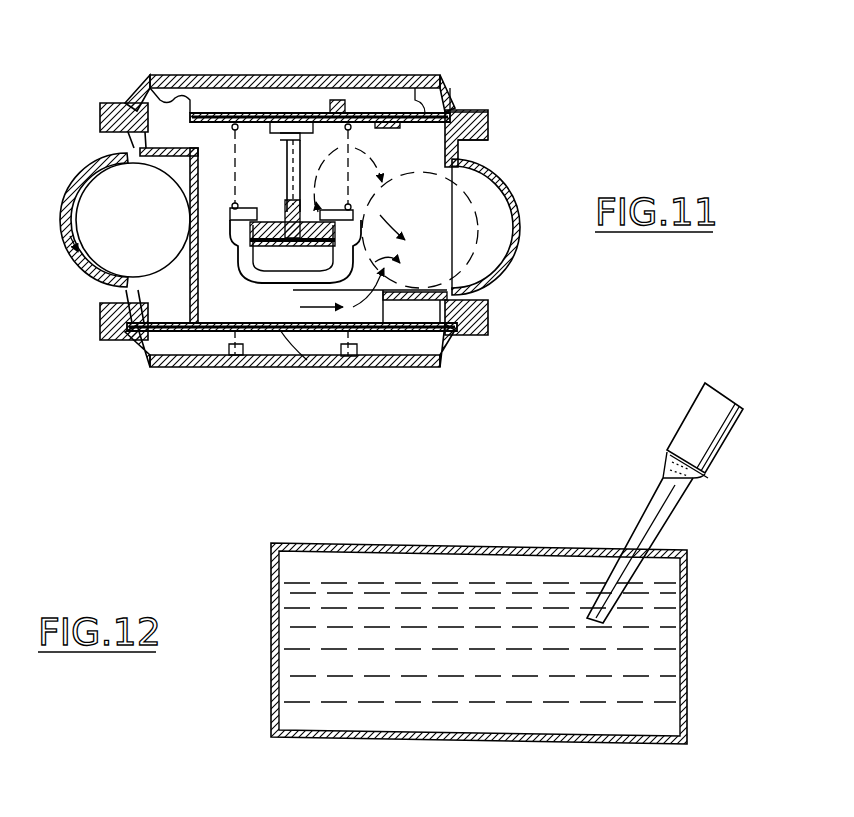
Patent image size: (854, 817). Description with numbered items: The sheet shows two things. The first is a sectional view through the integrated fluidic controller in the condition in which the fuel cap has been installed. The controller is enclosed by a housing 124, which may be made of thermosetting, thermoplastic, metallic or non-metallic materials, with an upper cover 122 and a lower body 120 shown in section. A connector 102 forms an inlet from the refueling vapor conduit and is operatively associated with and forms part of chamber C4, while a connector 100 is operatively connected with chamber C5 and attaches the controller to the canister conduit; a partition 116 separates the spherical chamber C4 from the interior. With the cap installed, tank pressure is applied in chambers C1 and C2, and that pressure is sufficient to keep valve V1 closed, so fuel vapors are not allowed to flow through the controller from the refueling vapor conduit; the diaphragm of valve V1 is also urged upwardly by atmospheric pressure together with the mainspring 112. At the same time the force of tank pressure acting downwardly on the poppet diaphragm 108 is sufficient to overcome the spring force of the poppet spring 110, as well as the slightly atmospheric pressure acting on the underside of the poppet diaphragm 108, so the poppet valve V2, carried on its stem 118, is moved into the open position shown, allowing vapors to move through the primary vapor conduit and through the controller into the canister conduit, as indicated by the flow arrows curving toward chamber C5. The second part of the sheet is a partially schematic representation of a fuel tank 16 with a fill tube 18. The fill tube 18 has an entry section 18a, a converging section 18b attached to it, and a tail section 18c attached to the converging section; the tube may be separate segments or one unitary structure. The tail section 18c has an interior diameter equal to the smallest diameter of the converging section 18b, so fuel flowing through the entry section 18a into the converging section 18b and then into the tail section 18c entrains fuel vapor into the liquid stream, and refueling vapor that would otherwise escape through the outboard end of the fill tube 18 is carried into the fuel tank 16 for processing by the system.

In FIG. 11, the upper housing cover 122 is at (150, 74).
In FIG. 11, the chamber C2 is at (207, 100).
In FIG. 11, the valve stem 118 is at (278, 213).
In FIG. 11, the poppet valve V2 is at (273, 113).
In FIG. 11, the poppet diaphragm 108 is at (340, 112).
In FIG. 11, the poppet spring 110 is at (383, 113).
In FIG. 11, the housing 124 is at (458, 152).
In FIG. 11, the connector 100 is at (503, 183).
In FIG. 11, the connector 102 is at (80, 182).
In FIG. 11, the chamber C4 is at (160, 273).
In FIG. 11, the chamber C5 is at (415, 157).
In FIG. 11, the valve V1 is at (158, 351).
In FIG. 11, the partition wall 116 is at (190, 328).
In FIG. 11, the chamber C1 is at (217, 344).
In FIG. 11, the lower housing 120 is at (283, 368).
In FIG. 11, the mainspring 112 is at (362, 368).
In FIG. 12, the fill tube 18 is at (686, 501).
In FIG. 12, the entry section 18a is at (685, 418).
In FIG. 12, the converging section 18b is at (667, 471).
In FIG. 12, the tail section 18c is at (640, 566).
In FIG. 12, the fuel tank 16 is at (462, 745).